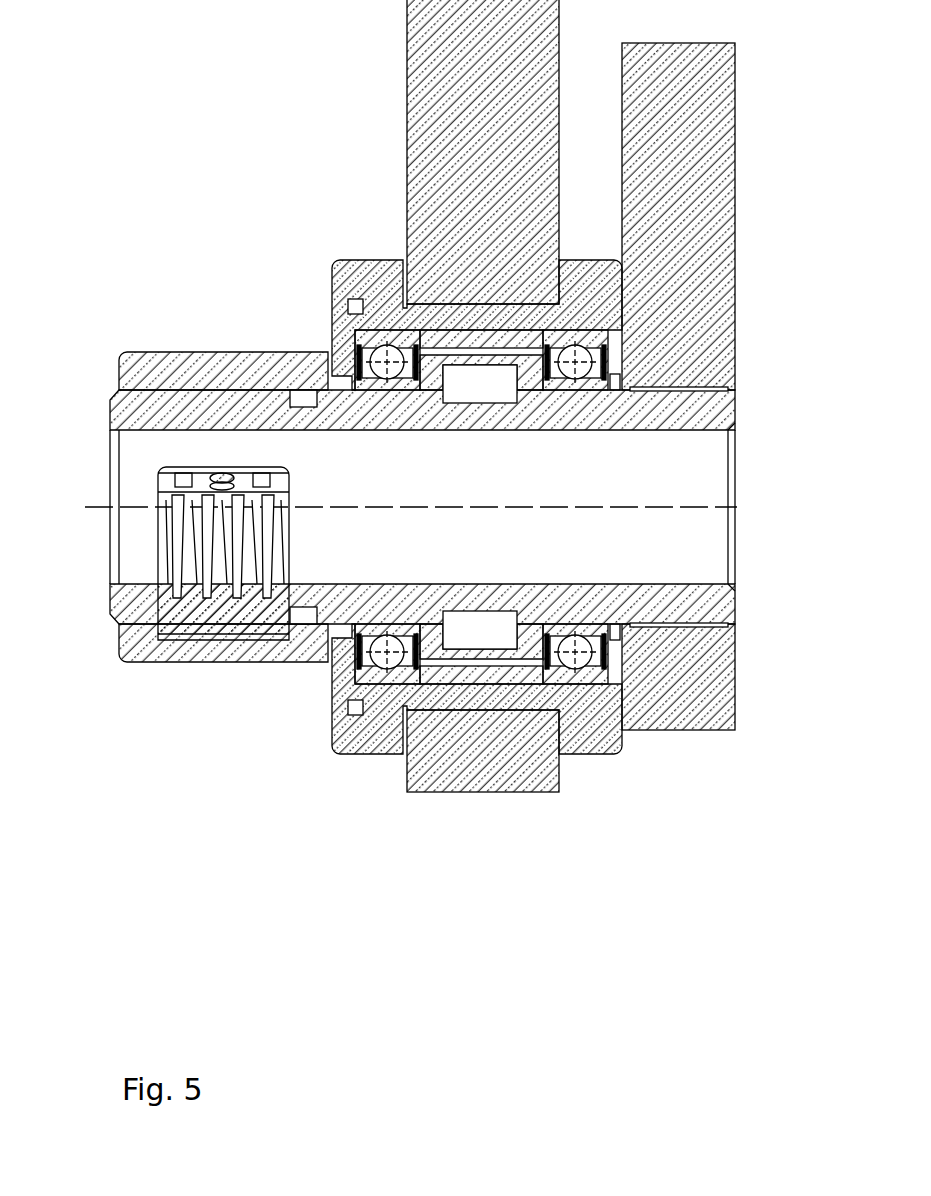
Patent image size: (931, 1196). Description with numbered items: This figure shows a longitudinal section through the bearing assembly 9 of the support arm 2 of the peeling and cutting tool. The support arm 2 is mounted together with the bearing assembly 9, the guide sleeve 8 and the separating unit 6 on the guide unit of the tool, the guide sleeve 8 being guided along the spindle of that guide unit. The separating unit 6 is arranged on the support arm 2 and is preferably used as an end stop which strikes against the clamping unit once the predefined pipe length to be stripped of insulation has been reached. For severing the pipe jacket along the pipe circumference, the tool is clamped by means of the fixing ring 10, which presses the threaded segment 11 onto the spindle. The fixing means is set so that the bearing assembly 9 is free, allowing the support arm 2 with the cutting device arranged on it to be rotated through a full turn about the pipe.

The support arm 2 is at (493, 764).
The separating unit 6 is at (705, 692).
The guide sleeve 8 is at (697, 603).
The bearing assembly 9 is at (360, 778).
The fixing ring 10 is at (142, 357).
The threaded segment 11 is at (222, 605).